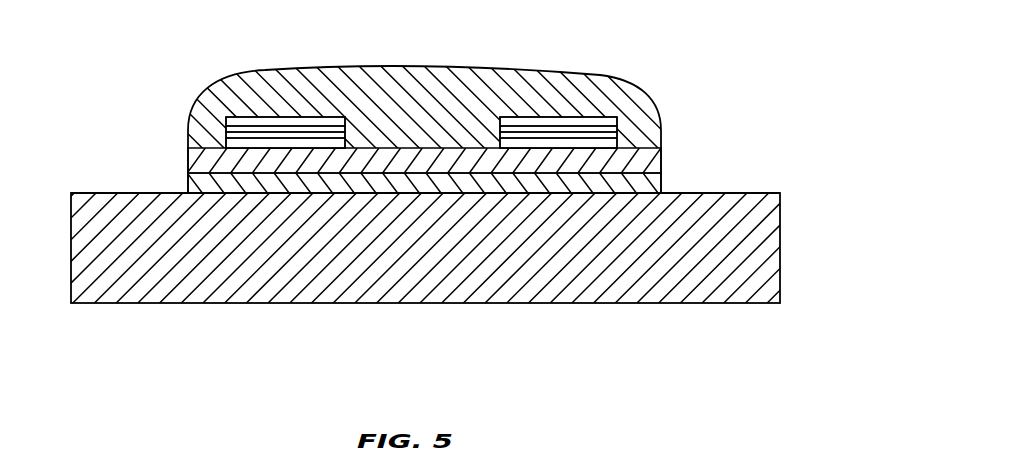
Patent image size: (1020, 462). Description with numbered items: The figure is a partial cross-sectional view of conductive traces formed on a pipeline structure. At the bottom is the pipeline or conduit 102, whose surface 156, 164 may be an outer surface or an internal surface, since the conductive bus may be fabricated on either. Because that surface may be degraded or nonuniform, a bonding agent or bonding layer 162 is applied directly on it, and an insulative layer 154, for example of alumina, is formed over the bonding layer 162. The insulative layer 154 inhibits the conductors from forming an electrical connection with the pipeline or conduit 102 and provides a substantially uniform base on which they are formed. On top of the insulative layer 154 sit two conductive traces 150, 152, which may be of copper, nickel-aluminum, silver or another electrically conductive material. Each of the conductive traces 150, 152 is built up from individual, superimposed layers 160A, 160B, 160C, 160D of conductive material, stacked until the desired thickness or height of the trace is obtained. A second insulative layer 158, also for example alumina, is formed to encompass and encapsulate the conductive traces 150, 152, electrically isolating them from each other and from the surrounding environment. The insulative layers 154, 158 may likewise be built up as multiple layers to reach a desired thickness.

The pipeline or conduit 102 is at (668, 272).
The conductor 150 is at (250, 113).
The conductor 152 is at (560, 113).
The insulative layer 154 is at (661, 163).
The outer surface 156 is at (718, 196).
The internal surface 164 is at (718, 196).
The second insulative layer 158 is at (412, 78).
The layer of conductive material 160A is at (226, 121).
The layer of conductive material 160B is at (226, 129).
The layer of conductive material 160C is at (226, 135).
The layer of conductive material 160D is at (226, 143).
The bonding layer 162 is at (187, 183).